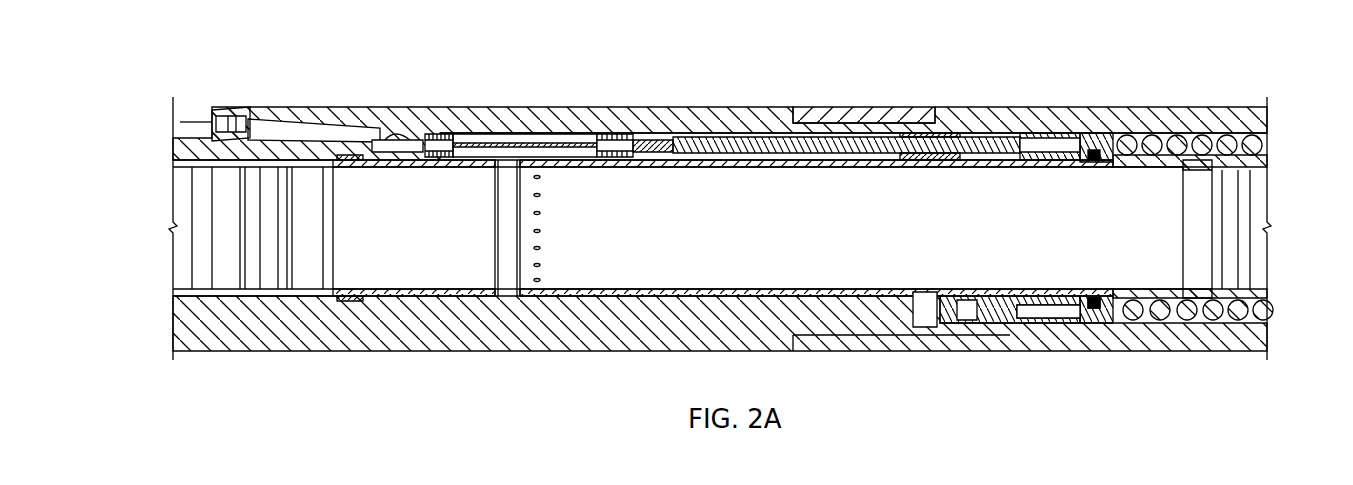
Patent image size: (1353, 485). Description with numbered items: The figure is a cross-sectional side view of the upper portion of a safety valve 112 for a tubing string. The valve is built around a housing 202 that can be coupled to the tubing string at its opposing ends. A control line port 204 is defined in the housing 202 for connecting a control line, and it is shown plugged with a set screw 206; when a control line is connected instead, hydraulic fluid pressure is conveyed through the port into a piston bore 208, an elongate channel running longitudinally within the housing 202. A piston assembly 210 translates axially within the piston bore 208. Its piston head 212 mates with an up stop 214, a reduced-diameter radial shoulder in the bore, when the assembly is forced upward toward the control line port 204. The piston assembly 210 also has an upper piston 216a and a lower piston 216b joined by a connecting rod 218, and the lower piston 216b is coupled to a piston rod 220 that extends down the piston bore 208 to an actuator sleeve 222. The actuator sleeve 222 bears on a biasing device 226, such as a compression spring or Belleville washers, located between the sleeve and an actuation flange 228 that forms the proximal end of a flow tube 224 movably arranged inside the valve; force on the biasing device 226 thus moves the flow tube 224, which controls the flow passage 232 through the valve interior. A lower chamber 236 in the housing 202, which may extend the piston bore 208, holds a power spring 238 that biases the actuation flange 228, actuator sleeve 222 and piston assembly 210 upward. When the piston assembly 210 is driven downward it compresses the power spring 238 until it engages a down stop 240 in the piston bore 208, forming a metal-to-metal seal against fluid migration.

The safety valve 112 is at (403, 38).
The housing 202 is at (753, 107).
The control line port 204 is at (279, 118).
The set screw 206 is at (227, 105).
The piston bore 208 is at (404, 122).
The piston assembly 210 is at (685, 100).
The piston head 212 is at (415, 162).
The up stop 214 is at (432, 133).
The upper piston 216a is at (458, 165).
The lower piston 216b is at (628, 165).
The connecting rod 218 is at (588, 133).
The piston rod 220 is at (852, 147).
The actuator sleeve 222 is at (1033, 133).
The flow tube 224 is at (1200, 168).
The biasing device 226 is at (1093, 162).
The actuation flange 228 is at (1107, 162).
The flow passage 232 is at (917, 232).
The lower chamber 236 is at (1240, 133).
The power spring 238 is at (1152, 133).
The down stop 240 is at (937, 137).